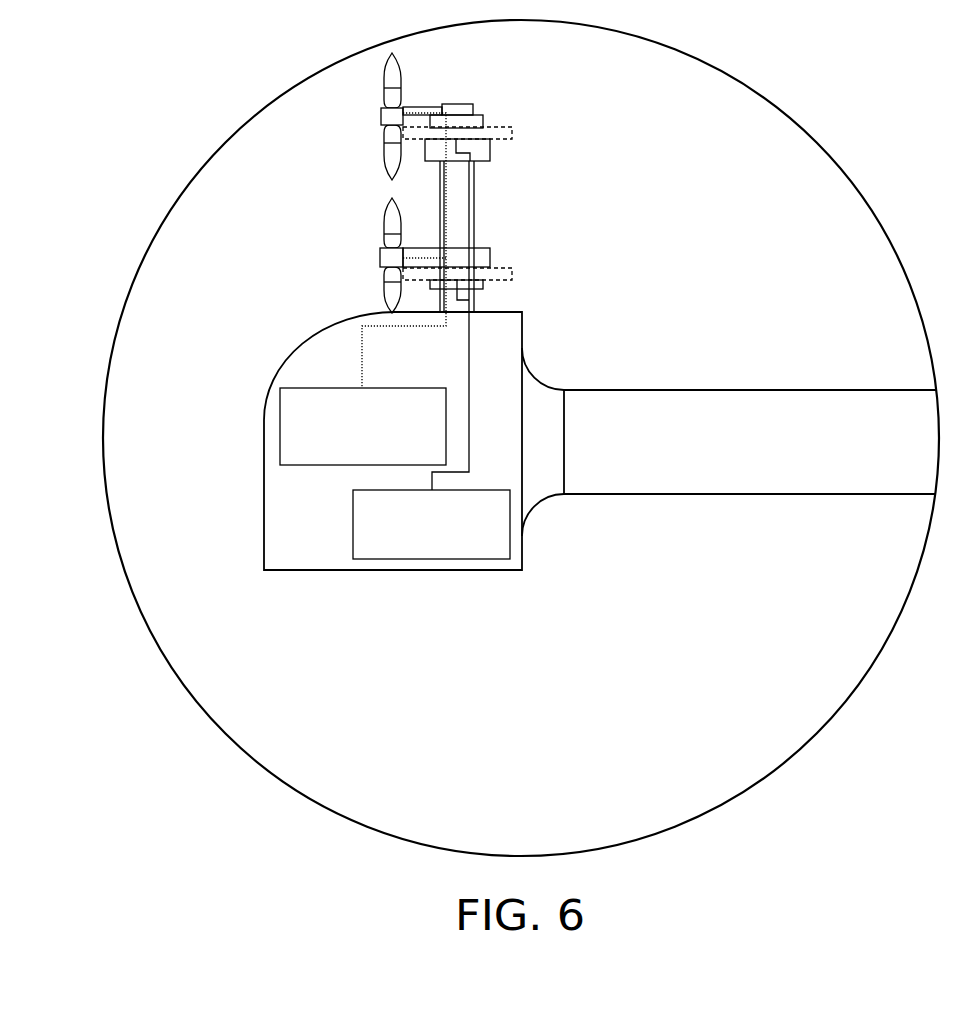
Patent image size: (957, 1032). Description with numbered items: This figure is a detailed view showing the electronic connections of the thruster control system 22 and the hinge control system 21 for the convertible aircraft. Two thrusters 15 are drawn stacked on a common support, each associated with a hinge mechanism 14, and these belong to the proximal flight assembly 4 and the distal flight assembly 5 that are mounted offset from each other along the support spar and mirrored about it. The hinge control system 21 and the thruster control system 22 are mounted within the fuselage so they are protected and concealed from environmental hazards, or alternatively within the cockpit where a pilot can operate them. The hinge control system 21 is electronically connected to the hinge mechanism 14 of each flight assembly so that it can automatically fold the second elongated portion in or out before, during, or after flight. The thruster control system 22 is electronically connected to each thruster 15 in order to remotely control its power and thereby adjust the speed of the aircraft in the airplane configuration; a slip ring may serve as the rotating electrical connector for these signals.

The proximal flight assembly 4 is at (269, 261).
The distal flight assembly 5 is at (604, 133).
The hinge mechanism 14 is at (492, 128).
The thruster 15 is at (381, 117).
The hinge control system 21 is at (372, 552).
The thruster control system 22 is at (280, 413).